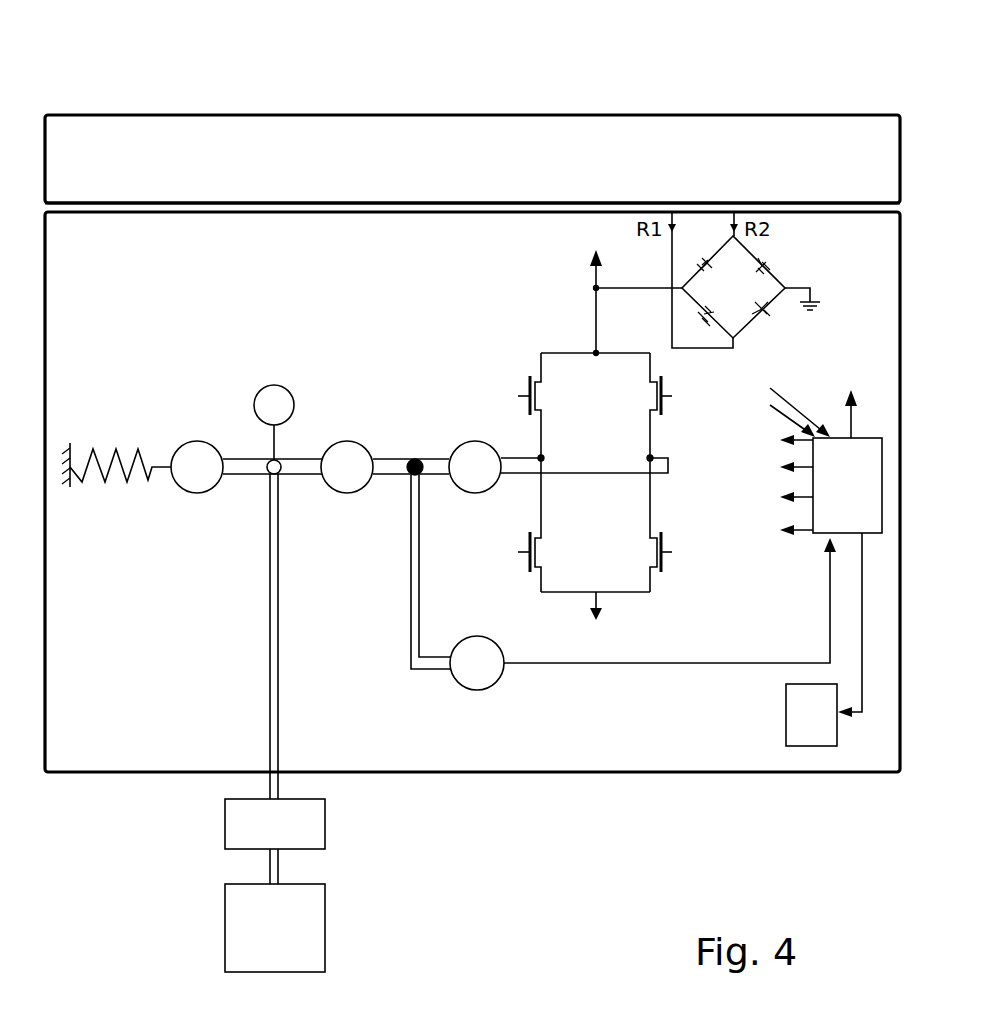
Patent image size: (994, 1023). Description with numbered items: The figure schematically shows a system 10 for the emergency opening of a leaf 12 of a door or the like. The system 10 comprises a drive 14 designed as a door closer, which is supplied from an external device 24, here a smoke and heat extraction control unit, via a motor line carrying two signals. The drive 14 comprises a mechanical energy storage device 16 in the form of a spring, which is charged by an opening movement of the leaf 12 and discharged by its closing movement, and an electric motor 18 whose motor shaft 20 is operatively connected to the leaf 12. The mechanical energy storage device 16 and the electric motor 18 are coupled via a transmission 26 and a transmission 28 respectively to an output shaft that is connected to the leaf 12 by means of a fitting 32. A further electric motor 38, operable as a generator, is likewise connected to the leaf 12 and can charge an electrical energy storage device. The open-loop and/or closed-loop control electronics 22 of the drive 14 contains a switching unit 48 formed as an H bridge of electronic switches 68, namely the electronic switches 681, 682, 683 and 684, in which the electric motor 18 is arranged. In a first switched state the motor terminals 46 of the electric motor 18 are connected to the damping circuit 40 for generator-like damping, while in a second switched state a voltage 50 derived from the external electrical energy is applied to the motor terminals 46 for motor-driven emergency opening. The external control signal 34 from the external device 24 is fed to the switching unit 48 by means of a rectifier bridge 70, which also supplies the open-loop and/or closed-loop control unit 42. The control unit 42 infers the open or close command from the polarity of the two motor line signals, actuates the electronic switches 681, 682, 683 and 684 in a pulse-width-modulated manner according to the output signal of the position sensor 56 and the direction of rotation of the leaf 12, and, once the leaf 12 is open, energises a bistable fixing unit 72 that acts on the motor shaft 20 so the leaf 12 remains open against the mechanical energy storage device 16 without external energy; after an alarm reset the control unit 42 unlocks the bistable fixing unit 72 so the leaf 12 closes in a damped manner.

The system 10 is at (519, 93).
The leaf 12 is at (275, 928).
The drive 14 is at (855, 214).
The mechanical energy storage device 16 is at (118, 473).
The electric motor 18 is at (468, 455).
The motor shaft 20 is at (432, 455).
The open-loop and/or closed-loop control electronics 22 is at (384, 252).
The external device 24 is at (818, 115).
The transmission 26 is at (200, 477).
The transmission 28 is at (352, 477).
The fitting 32 is at (274, 671).
The external control signal 34 is at (628, 128).
The electric motor 38 is at (477, 672).
The damping circuit 40 is at (650, 592).
The open-loop and/or closed-loop control unit 42 is at (818, 453).
The motor terminals 46 is at (515, 478).
The switching unit 48 is at (576, 469).
The voltage 50 is at (592, 270).
The position sensor 56 is at (296, 405).
The electronic switch 68 is at (597, 472).
The electronic switch 681 is at (509, 405).
The electronic switch 682 is at (683, 405).
The electronic switch 683 is at (509, 525).
The electronic switch 684 is at (683, 525).
The rectifier bridge 70 is at (773, 274).
The bistable fixing unit 72 is at (824, 639).